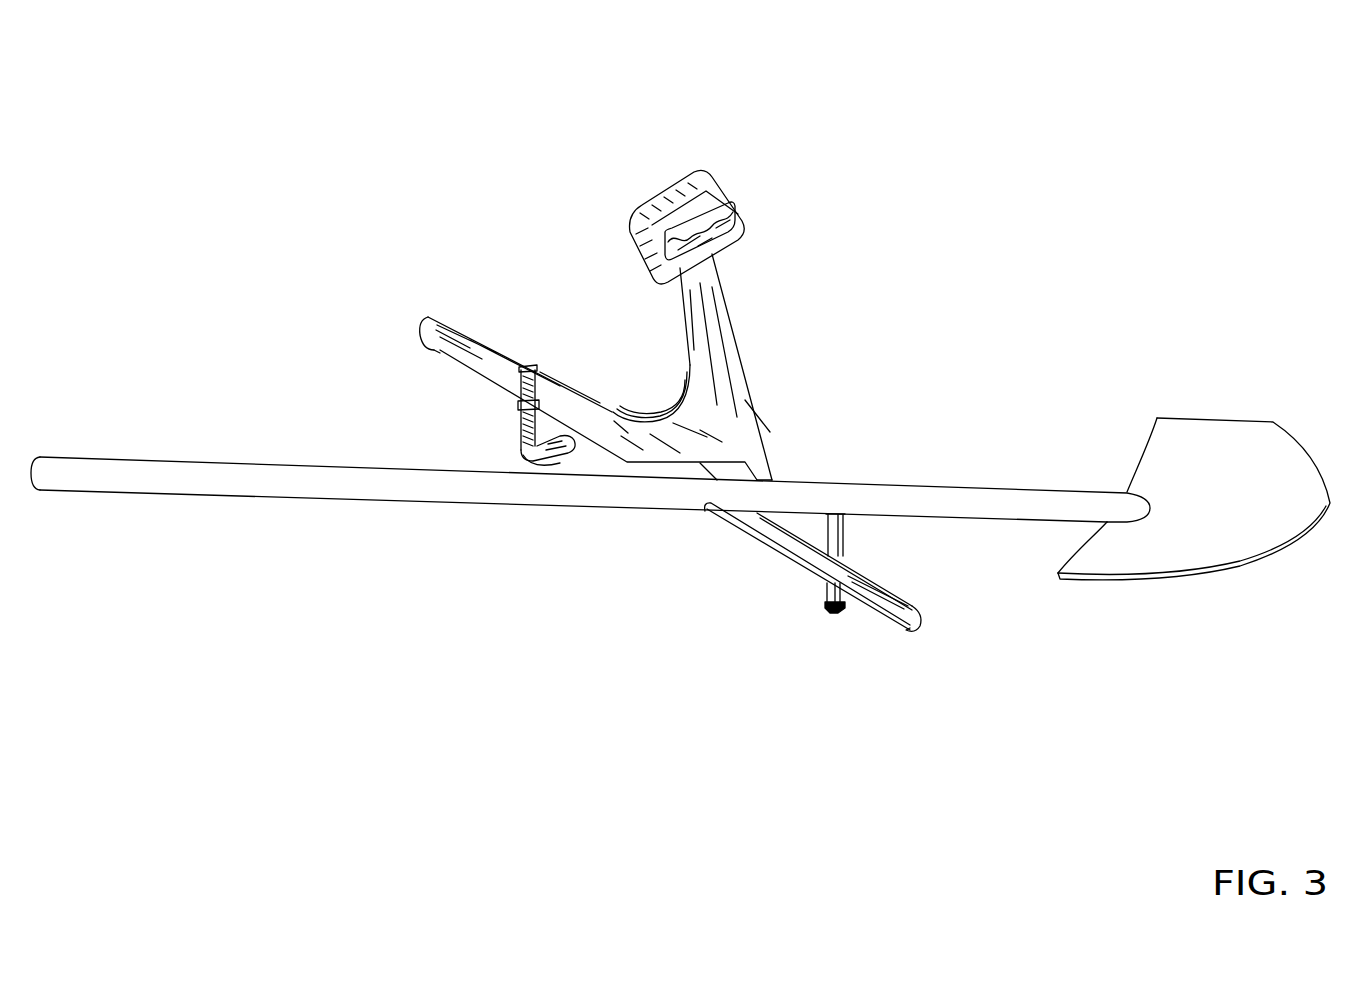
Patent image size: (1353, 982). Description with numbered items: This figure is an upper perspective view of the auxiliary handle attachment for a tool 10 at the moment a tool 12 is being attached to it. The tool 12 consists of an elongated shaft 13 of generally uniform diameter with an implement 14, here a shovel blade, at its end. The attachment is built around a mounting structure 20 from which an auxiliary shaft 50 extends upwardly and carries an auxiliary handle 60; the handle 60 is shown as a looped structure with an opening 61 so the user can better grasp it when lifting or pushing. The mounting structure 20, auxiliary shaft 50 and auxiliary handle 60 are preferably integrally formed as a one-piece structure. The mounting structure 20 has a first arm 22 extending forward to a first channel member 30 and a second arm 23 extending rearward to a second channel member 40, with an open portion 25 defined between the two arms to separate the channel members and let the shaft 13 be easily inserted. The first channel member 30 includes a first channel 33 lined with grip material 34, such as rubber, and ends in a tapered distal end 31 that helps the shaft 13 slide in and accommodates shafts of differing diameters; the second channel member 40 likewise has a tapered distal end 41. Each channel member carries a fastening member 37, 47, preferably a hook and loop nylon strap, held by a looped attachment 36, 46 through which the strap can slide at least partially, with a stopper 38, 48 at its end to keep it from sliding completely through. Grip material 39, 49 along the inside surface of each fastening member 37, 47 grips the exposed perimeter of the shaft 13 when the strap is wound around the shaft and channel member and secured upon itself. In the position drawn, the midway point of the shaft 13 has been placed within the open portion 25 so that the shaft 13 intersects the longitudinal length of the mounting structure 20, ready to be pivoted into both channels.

The auxiliary handle attachment for a tool 10 is at (779, 146).
The tool 12 is at (1009, 428).
The shaft 13 is at (971, 520).
The implement 14 is at (1220, 438).
The mounting structure 20 is at (828, 385).
The first arm 22 is at (772, 472).
The second arm 23 is at (632, 367).
The open portion 25 is at (668, 473).
The first channel member 30 is at (716, 648).
The tapered distal end 31 is at (906, 628).
The first channel 33 is at (922, 627).
The grip material 34 is at (770, 530).
The looped attachment 36 is at (860, 564).
The fastening member 37 is at (846, 527).
The stopper 38 is at (822, 612).
The grip material 39 is at (823, 591).
The second channel member 40 is at (509, 286).
The tapered distal end 41 is at (429, 324).
The looped attachment 46 is at (520, 401).
The fastening member 47 is at (525, 371).
The stopper 48 is at (523, 425).
The grip material 49 is at (556, 458).
The auxiliary shaft 50 is at (730, 317).
The auxiliary handle 60 is at (686, 180).
The opening 61 is at (746, 238).